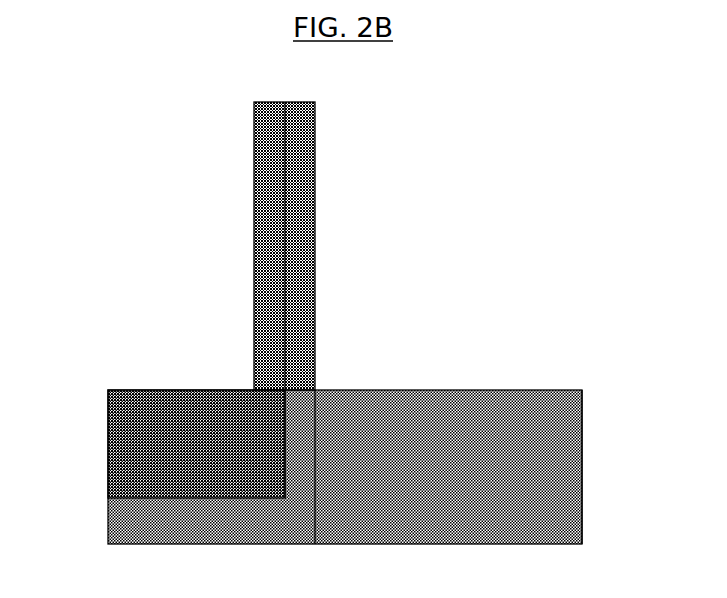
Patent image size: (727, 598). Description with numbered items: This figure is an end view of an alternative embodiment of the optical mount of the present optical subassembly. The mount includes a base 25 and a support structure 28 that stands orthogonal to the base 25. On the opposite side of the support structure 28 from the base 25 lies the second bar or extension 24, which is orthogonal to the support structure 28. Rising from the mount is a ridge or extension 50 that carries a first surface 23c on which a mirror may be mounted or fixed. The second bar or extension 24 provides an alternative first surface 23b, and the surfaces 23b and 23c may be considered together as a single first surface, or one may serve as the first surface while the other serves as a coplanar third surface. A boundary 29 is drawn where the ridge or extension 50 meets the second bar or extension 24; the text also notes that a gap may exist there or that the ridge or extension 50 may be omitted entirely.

The ridge or extension 50 is at (255, 160).
The first surface 23c is at (255, 227).
The boundary line 29 is at (284, 276).
The support structure 28 is at (315, 308).
The alternative first surface 23b is at (147, 450).
The second bar or extension 24 is at (133, 529).
The base 25 is at (582, 473).